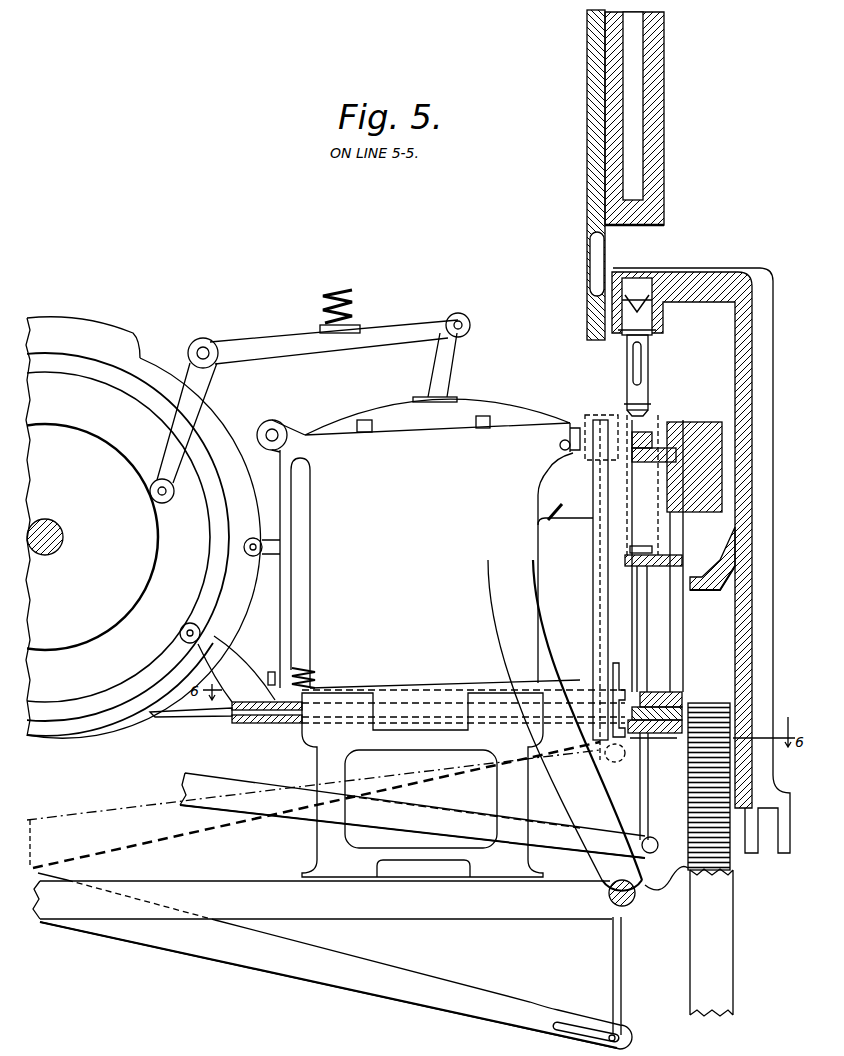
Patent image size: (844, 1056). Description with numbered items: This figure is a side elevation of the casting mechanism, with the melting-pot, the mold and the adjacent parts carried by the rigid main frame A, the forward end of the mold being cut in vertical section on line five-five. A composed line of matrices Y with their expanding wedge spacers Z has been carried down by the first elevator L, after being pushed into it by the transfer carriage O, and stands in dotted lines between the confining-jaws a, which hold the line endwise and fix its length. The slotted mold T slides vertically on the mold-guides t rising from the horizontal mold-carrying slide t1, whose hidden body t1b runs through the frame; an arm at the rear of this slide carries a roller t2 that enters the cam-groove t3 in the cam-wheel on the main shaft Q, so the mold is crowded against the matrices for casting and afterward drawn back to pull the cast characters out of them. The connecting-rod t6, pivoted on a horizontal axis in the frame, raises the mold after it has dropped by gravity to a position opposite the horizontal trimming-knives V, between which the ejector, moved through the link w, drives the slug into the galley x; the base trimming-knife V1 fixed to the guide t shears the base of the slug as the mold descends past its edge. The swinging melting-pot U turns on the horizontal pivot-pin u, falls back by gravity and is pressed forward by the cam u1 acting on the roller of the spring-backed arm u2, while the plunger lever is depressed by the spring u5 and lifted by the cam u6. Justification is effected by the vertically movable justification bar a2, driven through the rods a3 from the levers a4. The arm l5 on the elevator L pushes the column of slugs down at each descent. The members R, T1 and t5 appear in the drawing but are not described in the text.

The main frame A is at (350, 900).
The guide block R is at (664, 115).
The transfer carriage O is at (585, 264).
The first elevator L is at (712, 319).
The arm l5 is at (712, 591).
The matrices Y is at (648, 330).
The expanding wedge spacers Z is at (640, 366).
The slotted mold T is at (592, 414).
The mold-guides t is at (598, 592).
The bracket T1 is at (620, 690).
The confining-jaws a is at (648, 462).
The justification bar a2 is at (644, 540).
The rods a3 is at (645, 648).
The trimming-knives V is at (688, 692).
The galley x is at (710, 859).
The melting-pot U is at (418, 543).
The trimming-knife V1 is at (560, 508).
The arm u2 is at (283, 343).
The spring u5 is at (352, 300).
The cam u1 is at (100, 328).
The cam u6 is at (155, 474).
The main shaft Q is at (56, 522).
The roller t2 is at (184, 626).
The mold-carrying slide t1 is at (320, 672).
The cam-groove t3 is at (120, 689).
The link w is at (180, 718).
The mold-carrying slide t1b is at (463, 706).
The pivot-pin u is at (640, 902).
The link t5 is at (624, 976).
The connecting-rod t6 is at (416, 810).
The levers a4 is at (463, 816).